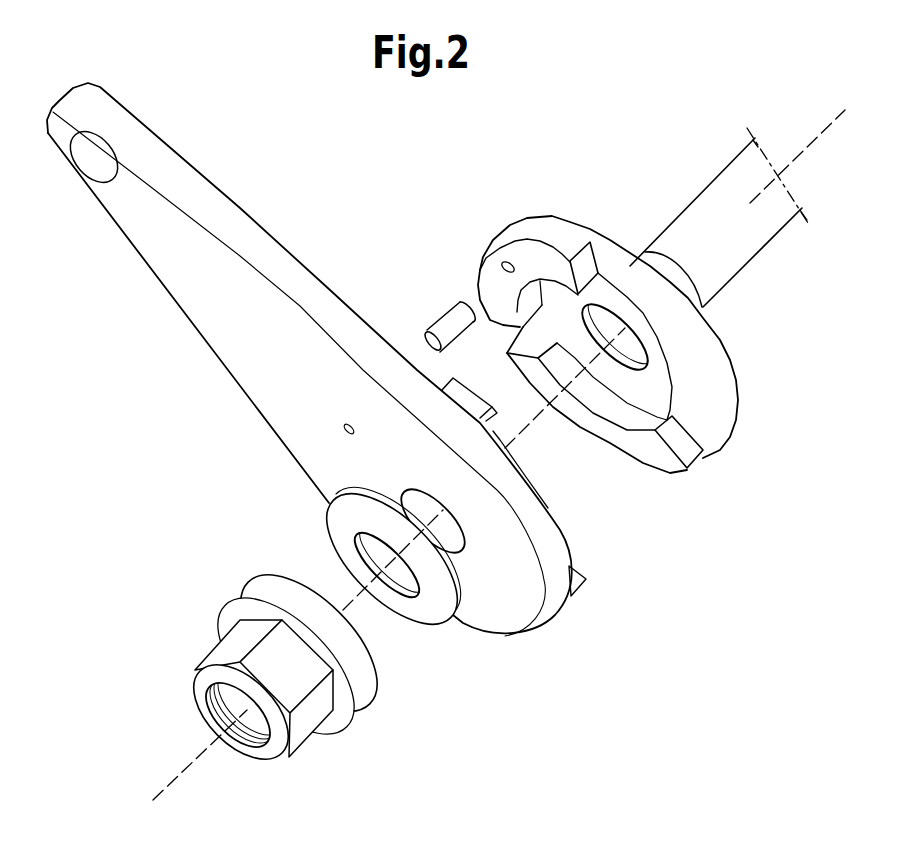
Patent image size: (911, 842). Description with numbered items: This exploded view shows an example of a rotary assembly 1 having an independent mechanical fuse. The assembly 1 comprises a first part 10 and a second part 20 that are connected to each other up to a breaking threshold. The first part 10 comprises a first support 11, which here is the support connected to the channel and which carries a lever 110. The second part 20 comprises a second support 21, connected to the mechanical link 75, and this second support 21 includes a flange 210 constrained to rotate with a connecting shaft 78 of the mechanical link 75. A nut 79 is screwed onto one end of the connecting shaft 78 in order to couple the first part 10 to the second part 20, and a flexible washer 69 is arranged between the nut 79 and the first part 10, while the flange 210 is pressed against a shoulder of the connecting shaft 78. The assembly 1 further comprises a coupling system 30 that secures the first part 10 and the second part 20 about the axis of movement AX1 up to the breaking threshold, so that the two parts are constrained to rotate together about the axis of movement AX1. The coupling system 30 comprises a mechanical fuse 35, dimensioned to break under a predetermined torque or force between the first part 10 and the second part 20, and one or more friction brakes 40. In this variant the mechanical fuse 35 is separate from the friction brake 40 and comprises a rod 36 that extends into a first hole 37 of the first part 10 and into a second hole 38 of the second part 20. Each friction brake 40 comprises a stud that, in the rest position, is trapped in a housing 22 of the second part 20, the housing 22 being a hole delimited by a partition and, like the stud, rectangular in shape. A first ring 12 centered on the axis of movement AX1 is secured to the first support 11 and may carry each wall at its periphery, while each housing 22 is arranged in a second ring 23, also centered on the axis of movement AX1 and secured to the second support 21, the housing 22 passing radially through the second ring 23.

The assembly 1 is at (438, 432).
The first part 10 is at (356, 359).
The first support 11 is at (188, 182).
The lever 110 is at (177, 303).
The first ring 12 is at (547, 483).
The second part 20 is at (624, 310).
The second support 21 is at (624, 310).
The flange 210 is at (624, 310).
The housing 22 is at (612, 267).
The second ring 23 is at (725, 405).
The coupling system 30 is at (411, 245).
The mechanical fuse 35 is at (411, 309).
The rod 36 is at (440, 320).
The first hole 37 is at (345, 430).
The second hole 38 is at (500, 267).
The friction brake 40 is at (592, 590).
The flexible washer 69 is at (420, 613).
The mechanical link 75 is at (723, 267).
The connecting shaft 78 is at (762, 230).
The nut 79 is at (263, 583).
The axis of movement AX1 is at (817, 138).